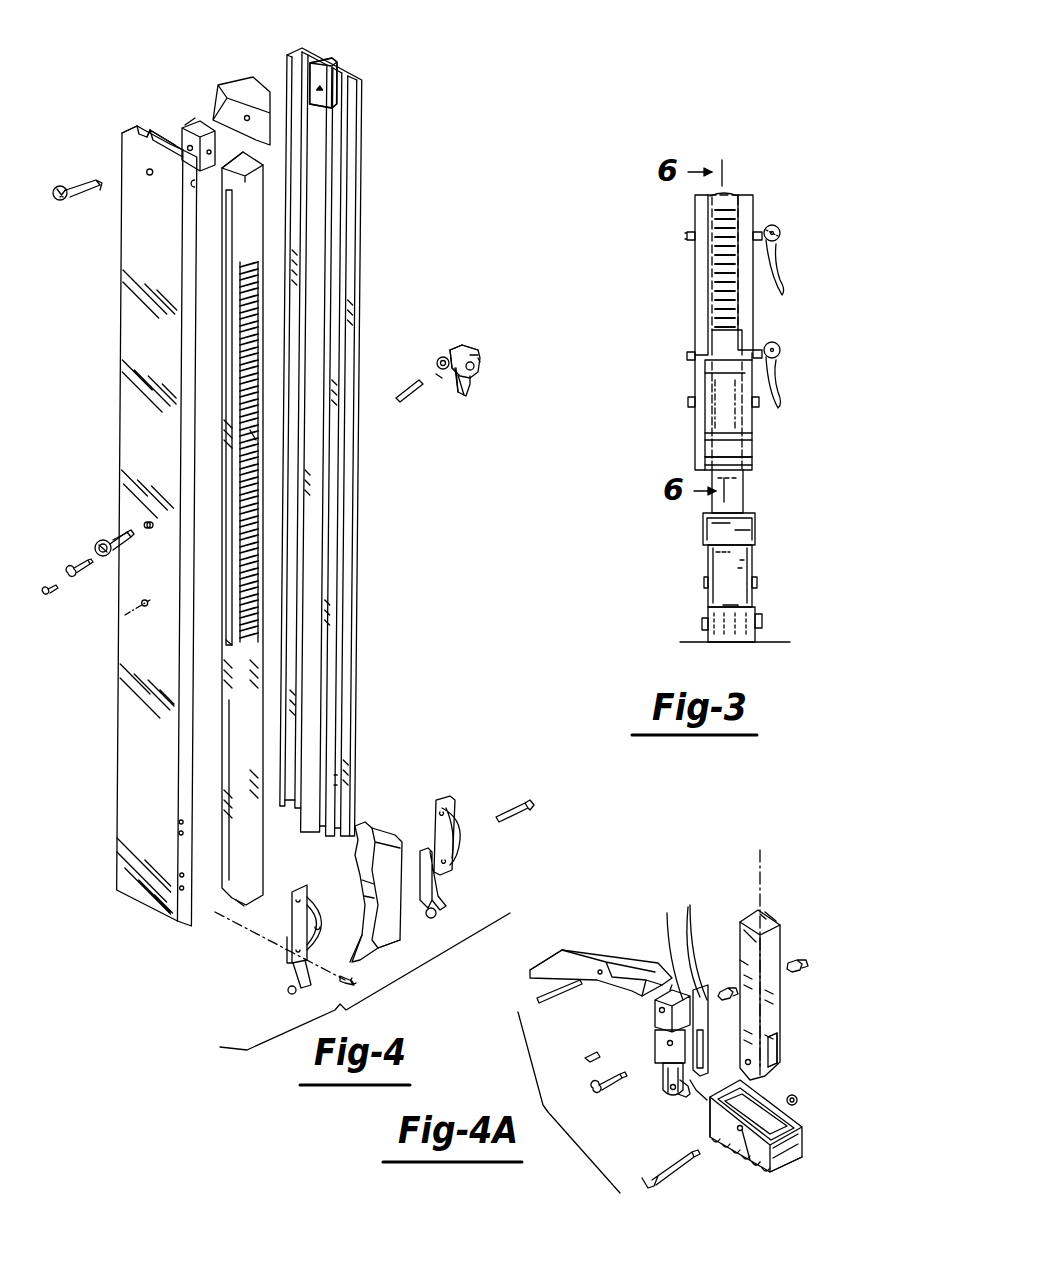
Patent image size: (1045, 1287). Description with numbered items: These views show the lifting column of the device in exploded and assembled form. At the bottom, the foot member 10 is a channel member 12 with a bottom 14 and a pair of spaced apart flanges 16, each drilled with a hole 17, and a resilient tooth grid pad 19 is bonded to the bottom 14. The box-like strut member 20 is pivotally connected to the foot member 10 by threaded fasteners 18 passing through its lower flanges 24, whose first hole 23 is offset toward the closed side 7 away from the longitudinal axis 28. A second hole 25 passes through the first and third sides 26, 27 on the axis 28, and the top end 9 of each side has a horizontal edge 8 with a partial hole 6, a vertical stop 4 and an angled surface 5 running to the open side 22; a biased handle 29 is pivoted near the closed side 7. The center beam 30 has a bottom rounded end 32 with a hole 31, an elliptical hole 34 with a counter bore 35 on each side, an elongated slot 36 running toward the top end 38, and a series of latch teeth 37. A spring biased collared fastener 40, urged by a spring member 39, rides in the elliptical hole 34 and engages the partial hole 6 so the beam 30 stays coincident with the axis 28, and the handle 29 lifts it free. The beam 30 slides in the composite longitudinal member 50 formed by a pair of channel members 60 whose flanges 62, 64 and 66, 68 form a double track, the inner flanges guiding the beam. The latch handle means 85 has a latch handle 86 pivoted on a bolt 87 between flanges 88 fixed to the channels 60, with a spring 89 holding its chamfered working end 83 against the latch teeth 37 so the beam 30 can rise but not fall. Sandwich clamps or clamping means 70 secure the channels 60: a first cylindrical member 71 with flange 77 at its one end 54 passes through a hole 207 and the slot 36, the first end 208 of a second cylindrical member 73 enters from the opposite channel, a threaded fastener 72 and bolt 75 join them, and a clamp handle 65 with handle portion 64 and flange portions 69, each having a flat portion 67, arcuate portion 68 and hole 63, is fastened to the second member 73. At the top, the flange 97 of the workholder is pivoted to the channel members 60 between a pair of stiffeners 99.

In FIG. 4A, the vertical surface or stop 4 is at (697, 903).
In FIG. 4A, the angled surface 5 is at (692, 944).
In FIG. 4A, the partial hole 6 is at (665, 1000).
In FIG. 4A, the closed side 7 is at (672, 985).
In FIG. 4A, the horizontal edge 8 is at (690, 905).
In FIG. 4A, the top end 9 is at (667, 913).
In FIG. 3, the foot member 10 is at (762, 626).
In FIG. 4A, the foot member 10 is at (708, 1128).
In FIG. 4A, the channel member 12 is at (800, 1125).
In FIG. 4A, the bottom 14 is at (790, 1166).
In FIG. 4A, the flanges 16 is at (775, 1098).
In FIG. 4A, the hole 17 is at (750, 1160).
In FIG. 3, the threaded fasteners 18 is at (763, 620).
In FIG. 4A, the threaded fasteners 18 is at (646, 1195).
In FIG. 4A, the resilient tooth grid pad 19 is at (752, 1172).
In FIG. 3, the strut member 20 is at (756, 566).
In FIG. 4A, the strut member 20 is at (666, 1092).
In FIG. 4A, the open side 22 is at (660, 1045).
In FIG. 4A, the first hole 23 is at (668, 1082).
In FIG. 4A, the flanges 24 is at (696, 1098).
In FIG. 4A, the second hole 25 is at (660, 1012).
In FIG. 4A, the first side 26 is at (614, 958).
In FIG. 4A, the third side 27 is at (745, 1015).
In FIG. 4, the longitudinal axis 28 is at (244, 906).
In FIG. 4A, the longitudinal axis 28 is at (765, 895).
In FIG. 3, the biased handle 29 is at (760, 522).
In FIG. 4A, the biased handle 29 is at (545, 958).
In FIG. 4, the center beam 30 is at (255, 850).
In FIG. 3, the center beam 30 is at (748, 490).
In FIG. 4A, the center beam 30 is at (782, 930).
In FIG. 4A, the hole 31 is at (770, 1064).
In FIG. 4A, the bottom rounded end 32 is at (780, 1048).
In FIG. 4A, the elliptical hole 34 is at (770, 985).
In FIG. 4A, the counter bore 35 is at (745, 965).
In FIG. 4, the elongated slot 36 is at (228, 645).
In FIG. 4, the latch teeth 37 is at (256, 438).
In FIG. 4, the top end 38 is at (263, 158).
In FIG. 4A, the spring member 39 is at (586, 1056).
In FIG. 4A, the spring biased collared fastener 40 is at (595, 1090).
In FIG. 4, the composite longitudinal member 50 is at (392, 647).
In FIG. 3, the composite longitudinal member 50 is at (776, 318).
In FIG. 4, the one end 54 is at (96, 542).
In FIG. 4, the channel members 60 is at (118, 388).
In FIG. 3, the channel members 60 is at (698, 333).
In FIG. 4, the flange 62 is at (142, 128).
In FIG. 4, the hole 63 is at (476, 378).
In FIG. 4, the elongated handle portion / inner flange 64 is at (160, 140).
In FIG. 4, the clamp handle 65 is at (470, 350).
In FIG. 4, the inner flange 66 is at (184, 128).
In FIG. 4, the flat portion 67 is at (455, 350).
In FIG. 4, the arcuate portion / outer flange 68 is at (193, 183).
In FIG. 3, the arcuate portion / outer flange 68 is at (770, 225).
In FIG. 4, the flange portions 69 is at (458, 348).
In FIG. 4, the clamping means 70 is at (474, 380).
In FIG. 3, the clamping means 70 is at (780, 236).
In FIG. 4, the first cylindrical member 71 is at (115, 540).
In FIG. 4, the threaded fastener 72 is at (80, 575).
In FIG. 4, the second cylindrical member 73 is at (441, 357).
In FIG. 4, the bolt 75 is at (50, 598).
In FIG. 4, the flange 77 is at (112, 630).
In FIG. 4, the working end 83 is at (368, 822).
In FIG. 4, the latch handle means 85 is at (416, 930).
In FIG. 3, the latch handle means 85 is at (770, 430).
In FIG. 4, the latch handle 86 is at (392, 944).
In FIG. 3, the latch handle 86 is at (756, 460).
In FIG. 4, the bolt 87 is at (518, 802).
In FIG. 4, the flanges 88 is at (308, 886).
In FIG. 4, the spring 89 is at (446, 908).
In FIG. 4, the flange 97 is at (253, 77).
In FIG. 4, the stiffeners 99 is at (200, 128).
In FIG. 4, the hole 207 is at (150, 520).
In FIG. 4, the first end 208 is at (410, 392).